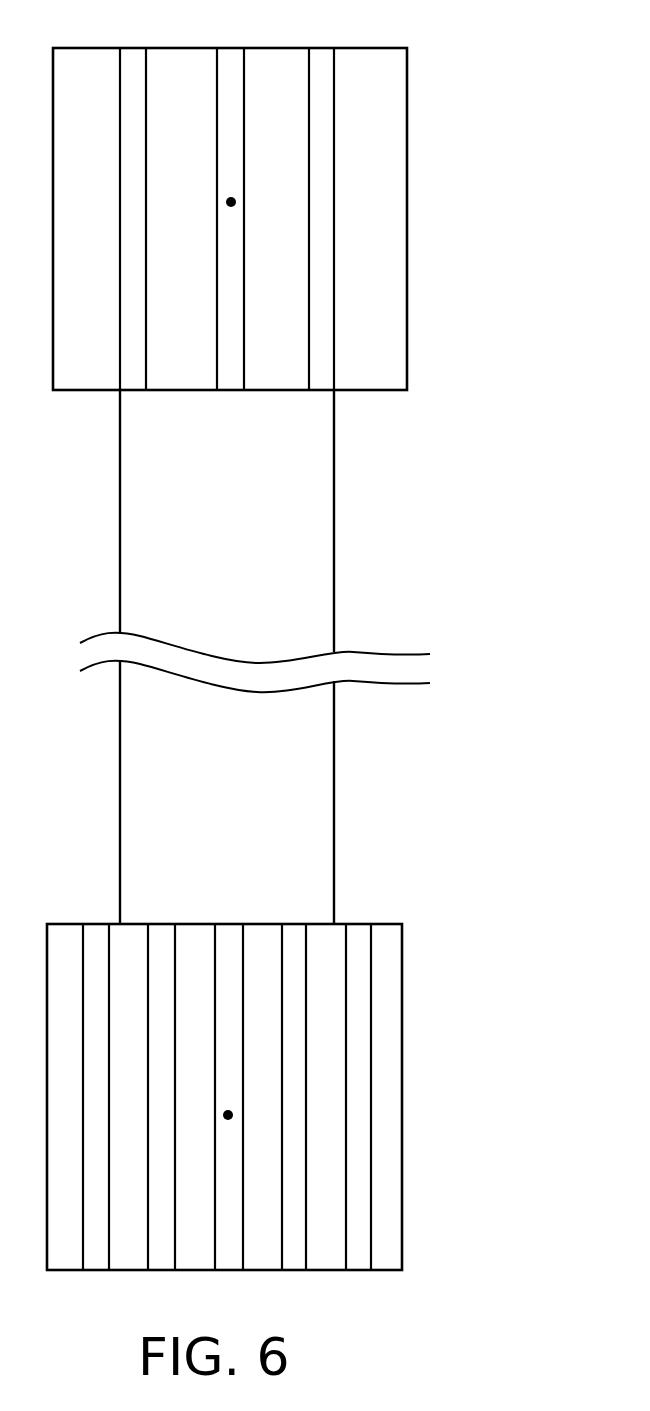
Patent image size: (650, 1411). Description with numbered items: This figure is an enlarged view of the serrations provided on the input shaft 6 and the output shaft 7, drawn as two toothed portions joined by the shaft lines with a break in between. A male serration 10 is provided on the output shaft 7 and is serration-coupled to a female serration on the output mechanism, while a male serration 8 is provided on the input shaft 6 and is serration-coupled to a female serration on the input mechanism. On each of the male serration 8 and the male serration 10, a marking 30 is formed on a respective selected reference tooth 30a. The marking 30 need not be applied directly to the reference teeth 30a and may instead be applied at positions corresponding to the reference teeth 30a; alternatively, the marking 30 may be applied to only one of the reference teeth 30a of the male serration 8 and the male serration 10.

The input shaft 6 is at (307, 813).
The output shaft 7 is at (313, 475).
The male serration 8 is at (402, 1029).
The male serration 10 is at (407, 308).
The marking 30 is at (231, 202).
The reference teeth 30a is at (232, 108).